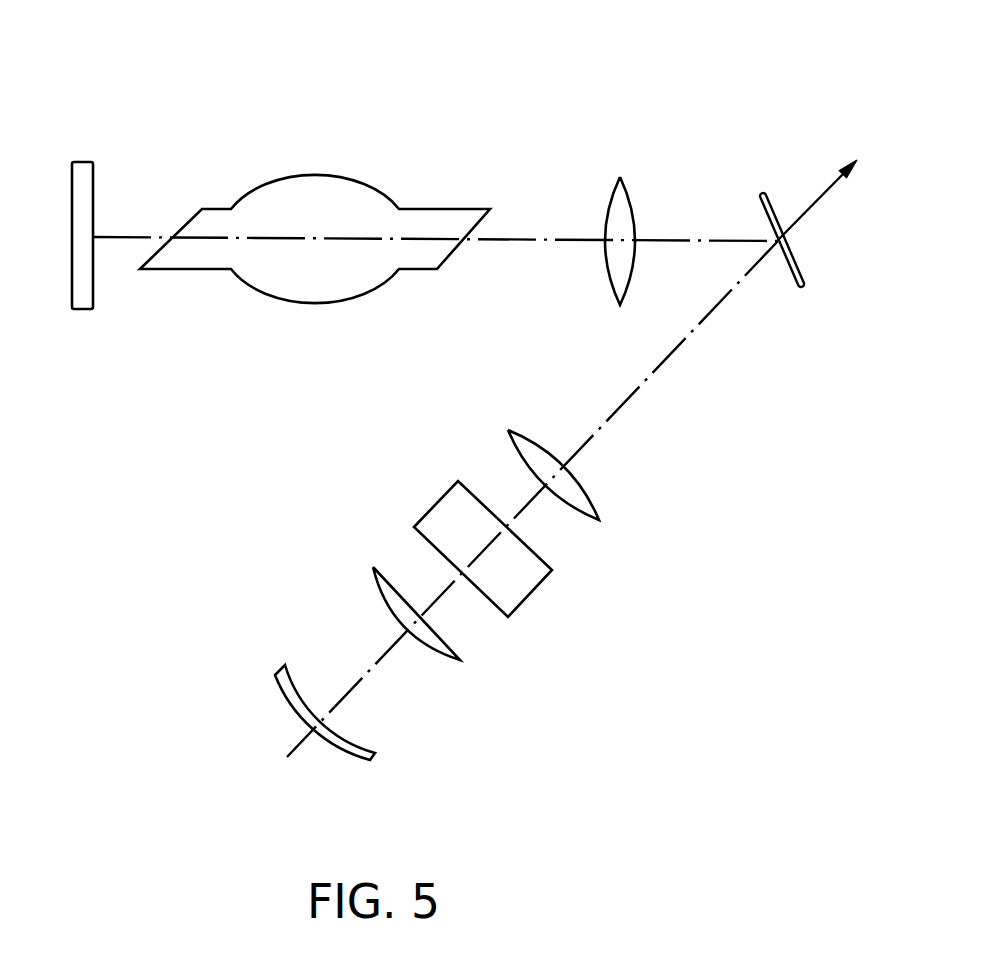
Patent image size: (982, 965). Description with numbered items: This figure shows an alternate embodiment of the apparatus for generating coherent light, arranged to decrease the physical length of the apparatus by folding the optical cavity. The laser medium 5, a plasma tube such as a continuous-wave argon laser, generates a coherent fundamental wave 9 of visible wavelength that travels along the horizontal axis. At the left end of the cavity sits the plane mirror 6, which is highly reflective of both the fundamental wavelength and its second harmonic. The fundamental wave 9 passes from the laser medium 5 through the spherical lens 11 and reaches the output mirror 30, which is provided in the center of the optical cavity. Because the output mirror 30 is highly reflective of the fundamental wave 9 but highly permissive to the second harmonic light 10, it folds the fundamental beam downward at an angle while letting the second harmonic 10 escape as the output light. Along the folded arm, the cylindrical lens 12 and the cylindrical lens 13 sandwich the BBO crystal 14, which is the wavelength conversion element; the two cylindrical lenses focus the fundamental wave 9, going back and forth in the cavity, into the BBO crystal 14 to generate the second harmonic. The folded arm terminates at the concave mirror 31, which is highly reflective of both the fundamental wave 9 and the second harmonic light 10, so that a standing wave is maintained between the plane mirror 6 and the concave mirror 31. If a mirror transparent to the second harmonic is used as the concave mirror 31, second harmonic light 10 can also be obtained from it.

The laser medium 5 is at (313, 177).
The plane mirror 6 is at (83, 165).
The laser light (fundamental wave) 9 is at (548, 238).
The second harmonic light 10 is at (825, 192).
The spherical lens 11 is at (624, 182).
The cylindrical lens 12 is at (593, 489).
The cylindrical lens 13 is at (458, 652).
The BBO crystal (wavelength conversion element) 14 is at (528, 582).
The output mirror 30 is at (792, 272).
The concave mirror 31 is at (372, 758).